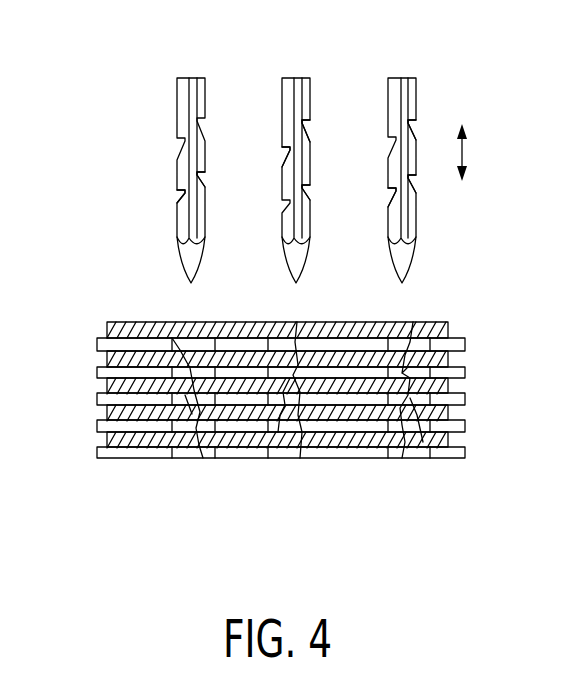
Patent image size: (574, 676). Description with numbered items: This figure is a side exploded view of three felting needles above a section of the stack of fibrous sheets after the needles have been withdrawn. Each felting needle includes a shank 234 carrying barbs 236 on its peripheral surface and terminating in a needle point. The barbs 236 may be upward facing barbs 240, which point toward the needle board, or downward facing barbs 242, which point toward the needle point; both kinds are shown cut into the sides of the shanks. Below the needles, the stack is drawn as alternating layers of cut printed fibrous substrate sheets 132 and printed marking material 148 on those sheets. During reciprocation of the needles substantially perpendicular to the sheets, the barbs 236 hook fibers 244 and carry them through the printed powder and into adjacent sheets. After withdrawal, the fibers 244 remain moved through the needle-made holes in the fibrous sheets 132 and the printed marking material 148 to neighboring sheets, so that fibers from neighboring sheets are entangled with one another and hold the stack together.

The shank 234 is at (98, 99).
The barbs 236 is at (282, 148).
The upward facing barbs 240 is at (303, 187).
The downward facing barbs 242 is at (184, 191).
The printed marking material 148 is at (128, 322).
The fibrous substrate sheets 132 is at (97, 369).
The fibers 244 is at (203, 458).